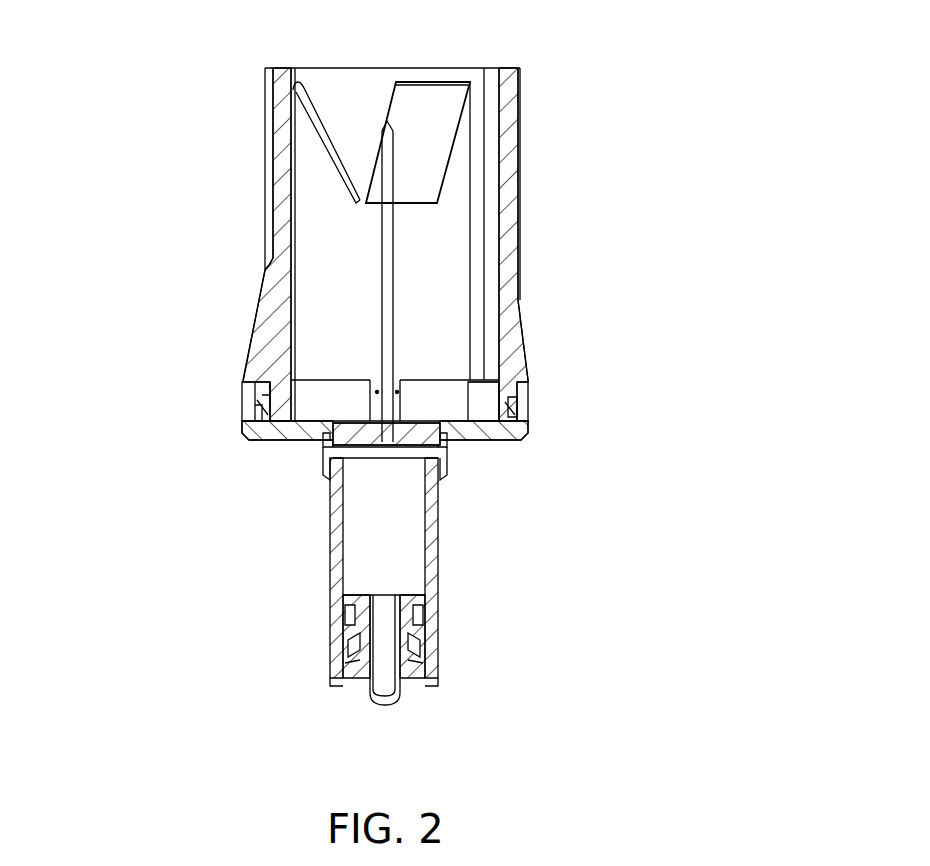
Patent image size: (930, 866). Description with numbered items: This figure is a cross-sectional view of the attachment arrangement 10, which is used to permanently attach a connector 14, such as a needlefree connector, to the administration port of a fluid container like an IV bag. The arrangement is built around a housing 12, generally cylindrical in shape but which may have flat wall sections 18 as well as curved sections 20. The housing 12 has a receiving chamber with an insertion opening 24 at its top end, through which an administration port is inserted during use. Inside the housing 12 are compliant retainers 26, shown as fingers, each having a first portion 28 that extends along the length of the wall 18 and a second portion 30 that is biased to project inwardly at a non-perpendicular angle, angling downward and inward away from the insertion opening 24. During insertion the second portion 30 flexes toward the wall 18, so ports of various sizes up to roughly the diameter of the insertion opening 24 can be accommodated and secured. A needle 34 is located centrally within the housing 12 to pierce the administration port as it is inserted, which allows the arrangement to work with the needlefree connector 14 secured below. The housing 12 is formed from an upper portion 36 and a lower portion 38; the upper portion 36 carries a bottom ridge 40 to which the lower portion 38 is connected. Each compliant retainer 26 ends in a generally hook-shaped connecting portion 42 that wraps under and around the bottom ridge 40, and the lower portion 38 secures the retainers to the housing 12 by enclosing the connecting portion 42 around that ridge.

The attachment arrangement 10 is at (128, 52).
The housing 12 is at (519, 70).
The connector 14 is at (416, 556).
The flat wall section 18 is at (478, 107).
The curved section 20 is at (338, 86).
The insertion opening 24 is at (383, 67).
The compliant retainer 26 is at (437, 135).
The first portion 28 is at (276, 264).
The second portion 30 is at (332, 147).
The needle 34 is at (398, 237).
The upper portion 36 is at (522, 302).
The lower portion 38 is at (524, 402).
The bottom ridge 40 is at (523, 433).
The connecting portion 42 is at (243, 392).